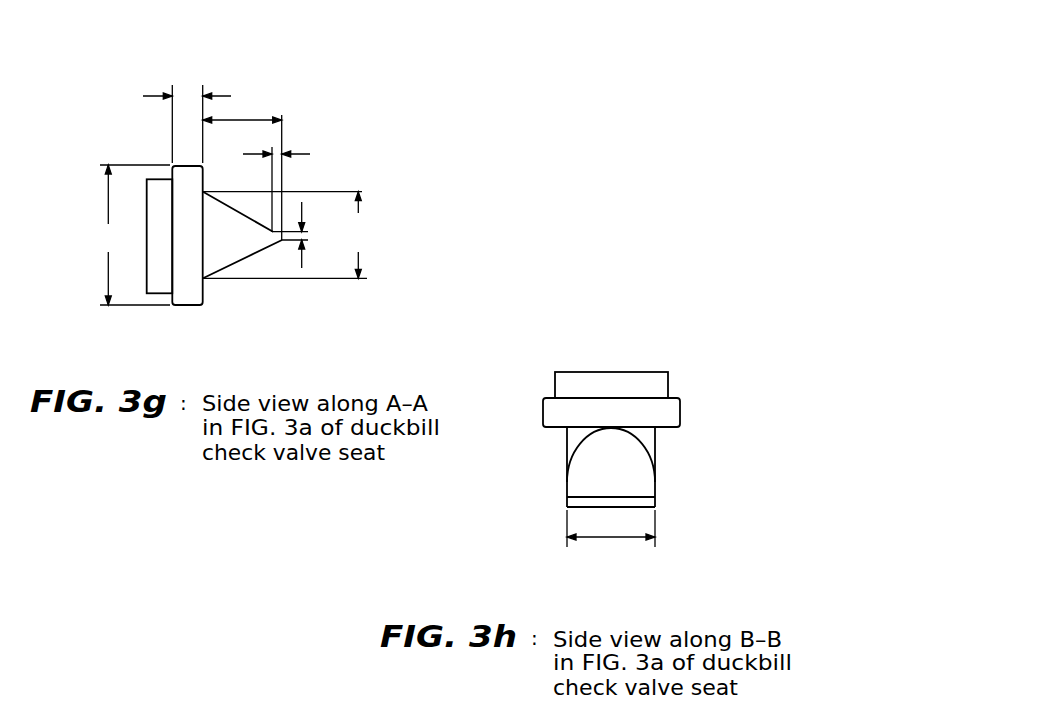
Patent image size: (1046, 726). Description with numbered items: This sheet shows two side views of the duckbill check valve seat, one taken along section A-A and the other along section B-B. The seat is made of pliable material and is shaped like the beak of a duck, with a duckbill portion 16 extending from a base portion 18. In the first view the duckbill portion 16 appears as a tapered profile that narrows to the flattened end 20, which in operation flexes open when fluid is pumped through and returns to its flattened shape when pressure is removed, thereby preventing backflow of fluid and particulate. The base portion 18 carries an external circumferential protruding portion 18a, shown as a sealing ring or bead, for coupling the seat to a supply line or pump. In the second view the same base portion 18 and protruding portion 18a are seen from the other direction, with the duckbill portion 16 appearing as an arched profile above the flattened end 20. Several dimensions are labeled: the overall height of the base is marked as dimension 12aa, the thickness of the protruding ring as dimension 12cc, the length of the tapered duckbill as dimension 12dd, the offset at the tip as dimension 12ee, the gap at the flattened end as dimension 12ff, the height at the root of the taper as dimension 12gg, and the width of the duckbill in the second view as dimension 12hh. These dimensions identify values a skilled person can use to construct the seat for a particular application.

In FIG. 3G, the duckbill portion 16 is at (238, 248).
In FIG. 3H, the duckbill portion 16 is at (592, 460).
In FIG. 3G, the base portion 18 is at (155, 295).
In FIG. 3H, the base portion 18 is at (593, 382).
In FIG. 3G, the external circumferential protruding portion 18a is at (192, 295).
In FIG. 3H, the external circumferential protruding portion 18a is at (641, 407).
In FIG. 3G, the flattened end 20 is at (273, 230).
In FIG. 3H, the flattened end 20 is at (657, 500).
In FIG. 3G, the dimension 12aa is at (127, 235).
In FIG. 3G, the dimension 12cc is at (217, 96).
In FIG. 3G, the dimension 12dd is at (244, 119).
In FIG. 3G, the dimension 12ee is at (297, 153).
In FIG. 3G, the dimension 12ff is at (303, 260).
In FIG. 3G, the dimension 12gg is at (294, 235).
In FIG. 3H, the dimension 12hh is at (611, 539).